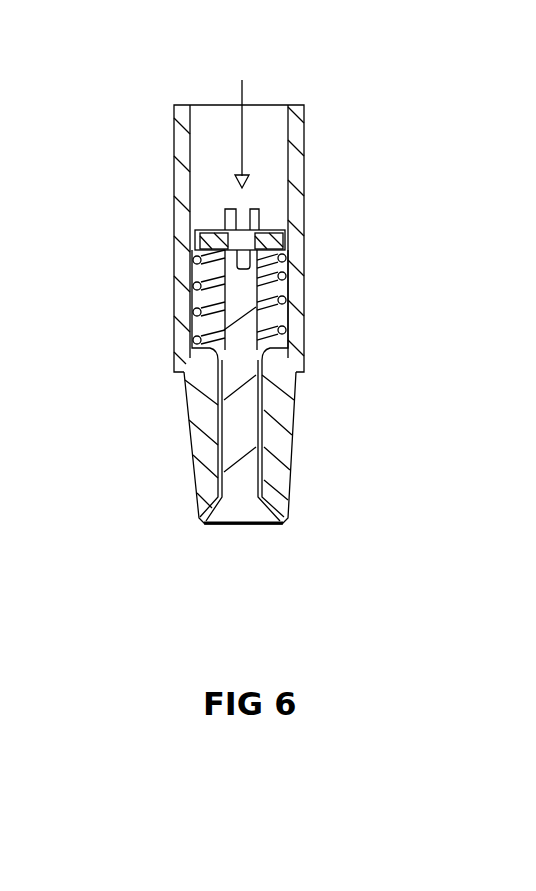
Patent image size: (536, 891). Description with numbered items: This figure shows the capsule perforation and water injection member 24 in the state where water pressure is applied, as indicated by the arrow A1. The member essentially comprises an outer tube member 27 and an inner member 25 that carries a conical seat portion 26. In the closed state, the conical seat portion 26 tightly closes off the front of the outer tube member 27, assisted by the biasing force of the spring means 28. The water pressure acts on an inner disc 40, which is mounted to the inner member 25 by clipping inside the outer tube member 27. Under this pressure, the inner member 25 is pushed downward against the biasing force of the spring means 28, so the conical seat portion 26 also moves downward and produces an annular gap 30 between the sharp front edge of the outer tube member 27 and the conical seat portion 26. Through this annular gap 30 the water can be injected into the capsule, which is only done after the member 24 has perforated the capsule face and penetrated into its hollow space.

The arrow A1 is at (246, 130).
The capsule perforation and water injection member 24 is at (215, 238).
The inner member 25 is at (246, 424).
The conical seat portion 26 is at (283, 524).
The outer tube member 27 is at (297, 170).
The spring means 28 is at (287, 297).
The annular gap 30 is at (210, 514).
The inner disc 40 is at (283, 238).